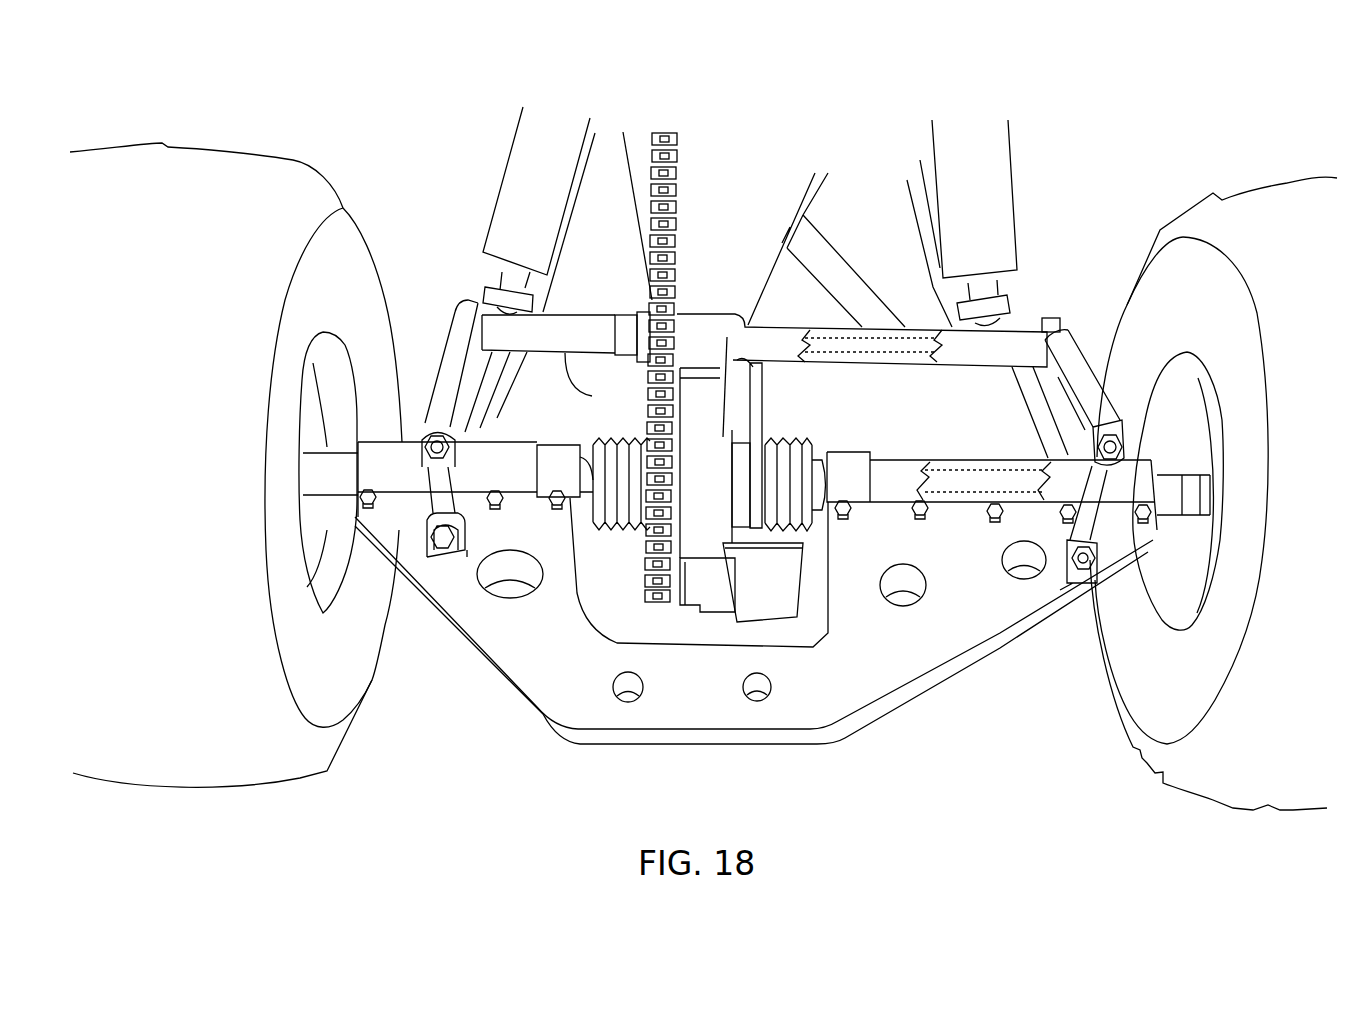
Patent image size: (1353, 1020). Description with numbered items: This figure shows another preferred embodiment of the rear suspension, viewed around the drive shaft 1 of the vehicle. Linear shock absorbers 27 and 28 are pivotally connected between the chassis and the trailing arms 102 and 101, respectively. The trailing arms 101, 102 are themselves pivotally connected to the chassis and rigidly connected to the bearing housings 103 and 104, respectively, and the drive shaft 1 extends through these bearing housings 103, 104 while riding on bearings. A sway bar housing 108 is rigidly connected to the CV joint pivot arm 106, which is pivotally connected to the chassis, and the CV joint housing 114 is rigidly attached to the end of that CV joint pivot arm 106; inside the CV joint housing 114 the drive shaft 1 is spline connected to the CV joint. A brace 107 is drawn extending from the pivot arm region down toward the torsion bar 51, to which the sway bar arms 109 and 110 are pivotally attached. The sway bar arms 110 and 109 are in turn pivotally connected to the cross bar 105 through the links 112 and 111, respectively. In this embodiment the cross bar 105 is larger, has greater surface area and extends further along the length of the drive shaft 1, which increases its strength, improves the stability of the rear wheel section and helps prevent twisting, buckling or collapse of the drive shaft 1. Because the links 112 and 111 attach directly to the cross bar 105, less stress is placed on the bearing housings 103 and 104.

The drive shaft 1 is at (953, 487).
The linear shock absorber 27 is at (1017, 213).
The linear shock absorber 28 is at (497, 205).
The torsion bar 51 is at (940, 340).
The trailing arm 101 is at (487, 408).
The trailing arm 102 is at (1007, 403).
The bearing housing 103 is at (550, 443).
The bearing housing 104 is at (903, 458).
The cross bar 105 is at (890, 697).
The CV joint pivot arm 106 is at (757, 187).
The frame brace 107 is at (847, 257).
The sway bar housing 108 is at (592, 396).
The sway bar arm 109 is at (1072, 357).
The sway bar arm 110 is at (440, 380).
The link 111 is at (1068, 585).
The link 112 is at (428, 553).
The CV joint housing 114 is at (705, 533).